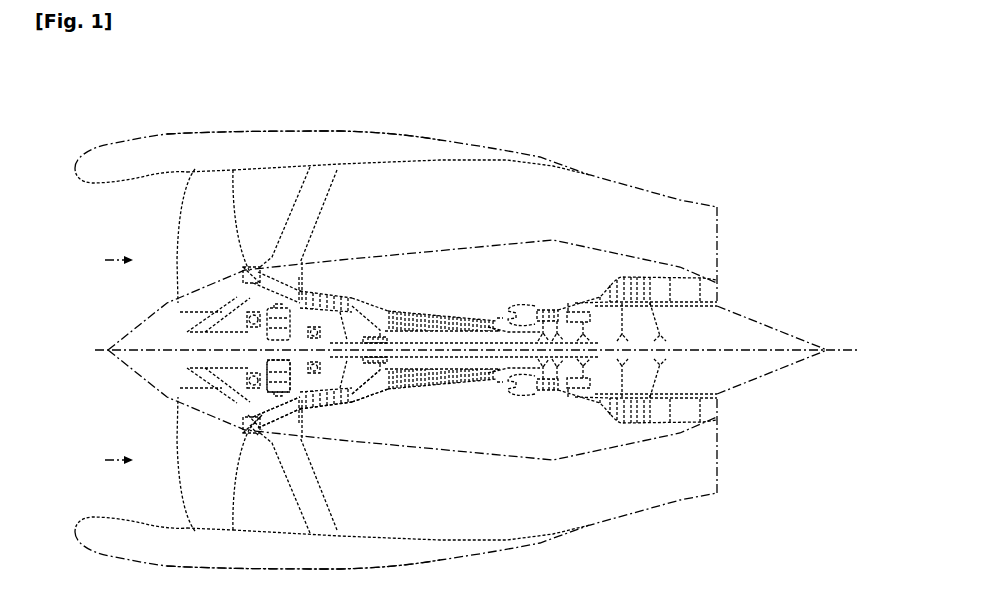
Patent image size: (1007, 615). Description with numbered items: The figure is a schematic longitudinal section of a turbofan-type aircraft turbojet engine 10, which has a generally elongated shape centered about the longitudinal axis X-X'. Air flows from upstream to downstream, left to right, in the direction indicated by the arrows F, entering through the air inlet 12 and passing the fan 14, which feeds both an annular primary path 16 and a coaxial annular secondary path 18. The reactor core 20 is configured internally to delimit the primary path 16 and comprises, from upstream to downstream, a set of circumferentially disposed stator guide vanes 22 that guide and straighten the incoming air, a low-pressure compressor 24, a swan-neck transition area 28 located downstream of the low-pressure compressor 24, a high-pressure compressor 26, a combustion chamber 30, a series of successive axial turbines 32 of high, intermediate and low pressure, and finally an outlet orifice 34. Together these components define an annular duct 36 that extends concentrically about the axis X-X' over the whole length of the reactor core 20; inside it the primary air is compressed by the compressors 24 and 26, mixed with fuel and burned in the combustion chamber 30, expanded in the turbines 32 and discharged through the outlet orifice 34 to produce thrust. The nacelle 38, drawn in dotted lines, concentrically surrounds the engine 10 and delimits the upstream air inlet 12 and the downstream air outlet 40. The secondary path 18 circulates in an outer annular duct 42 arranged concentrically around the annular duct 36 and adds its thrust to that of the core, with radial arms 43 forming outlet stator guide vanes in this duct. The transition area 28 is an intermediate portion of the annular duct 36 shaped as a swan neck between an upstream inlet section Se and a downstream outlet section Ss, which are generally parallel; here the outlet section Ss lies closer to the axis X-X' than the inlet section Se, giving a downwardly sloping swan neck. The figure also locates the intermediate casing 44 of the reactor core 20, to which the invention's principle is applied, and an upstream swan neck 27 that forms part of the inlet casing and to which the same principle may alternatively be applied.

The turbojet engine 10 is at (150, 202).
The air inlet 12 is at (78, 166).
The fan 14 is at (184, 178).
The primary path 16 is at (255, 272).
The secondary path 18 is at (287, 184).
The reactor core 20 is at (410, 262).
The stator guide vanes 22 is at (253, 436).
The low-pressure compressor 24 is at (338, 291).
The high-pressure compressor 26 is at (441, 305).
The upstream swan neck 27 is at (268, 428).
The transition area 28 is at (376, 404).
The combustion chamber 30 is at (528, 296).
The axial turbines 32 is at (613, 272).
The outlet orifice 34 is at (729, 292).
The annular duct 36 is at (264, 268).
The nacelle 38 is at (375, 133).
The air outlet 40 is at (717, 232).
The annular duct 42 is at (441, 175).
The radial arms 43 is at (320, 187).
The intermediate casing 44 is at (375, 294).
The upstream inlet section Se is at (358, 404).
The downstream outlet section Ss is at (390, 388).
The arrows F is at (118, 258).
The longitudinal axis X-X' is at (477, 311).